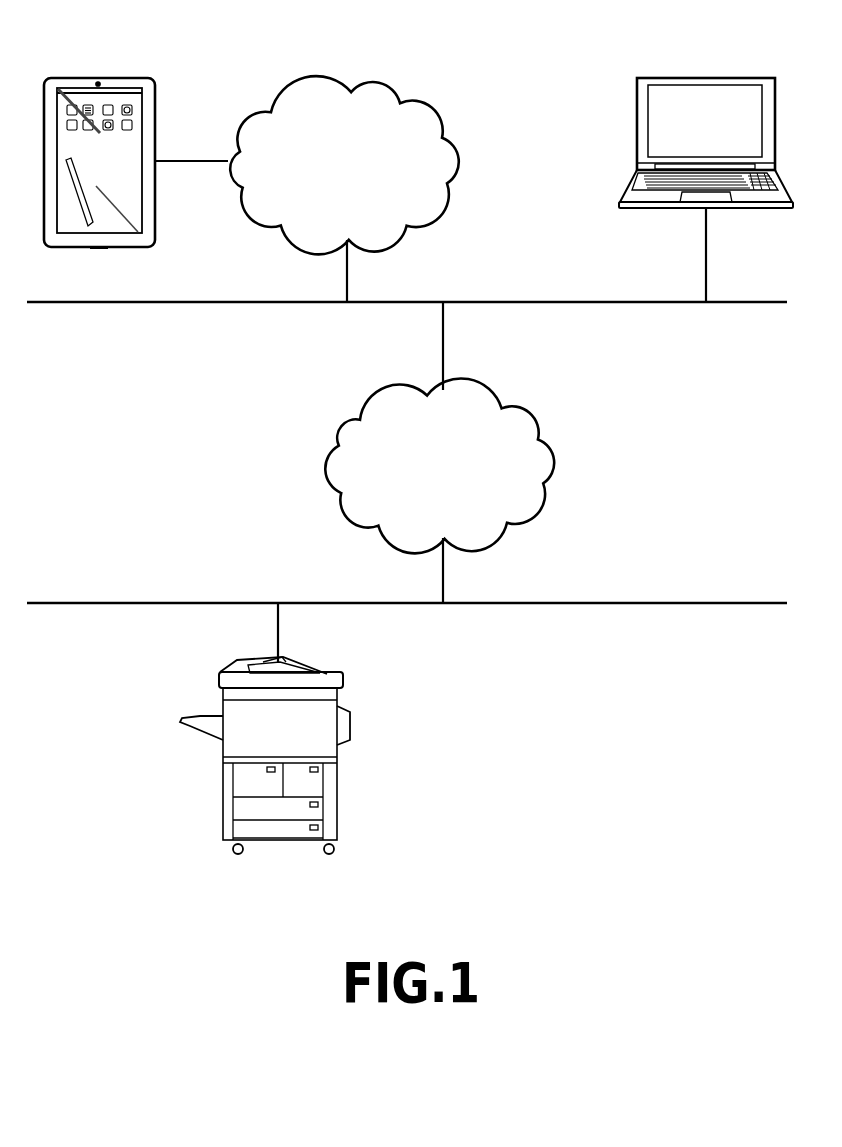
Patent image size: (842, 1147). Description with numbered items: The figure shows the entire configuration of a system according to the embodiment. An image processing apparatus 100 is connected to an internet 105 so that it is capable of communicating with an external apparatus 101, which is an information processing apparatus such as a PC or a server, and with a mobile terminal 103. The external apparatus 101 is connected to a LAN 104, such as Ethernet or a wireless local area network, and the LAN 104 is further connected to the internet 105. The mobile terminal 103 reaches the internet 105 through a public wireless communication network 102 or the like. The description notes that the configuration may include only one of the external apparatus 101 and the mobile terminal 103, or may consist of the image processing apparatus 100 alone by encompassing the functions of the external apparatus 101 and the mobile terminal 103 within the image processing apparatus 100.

The image processing apparatus 100 is at (337, 672).
The external apparatus 101 is at (742, 77).
The public wireless communication network 102 is at (410, 82).
The mobile terminal 103 is at (128, 76).
The LAN 104 is at (138, 602).
The internet 105 is at (505, 385).